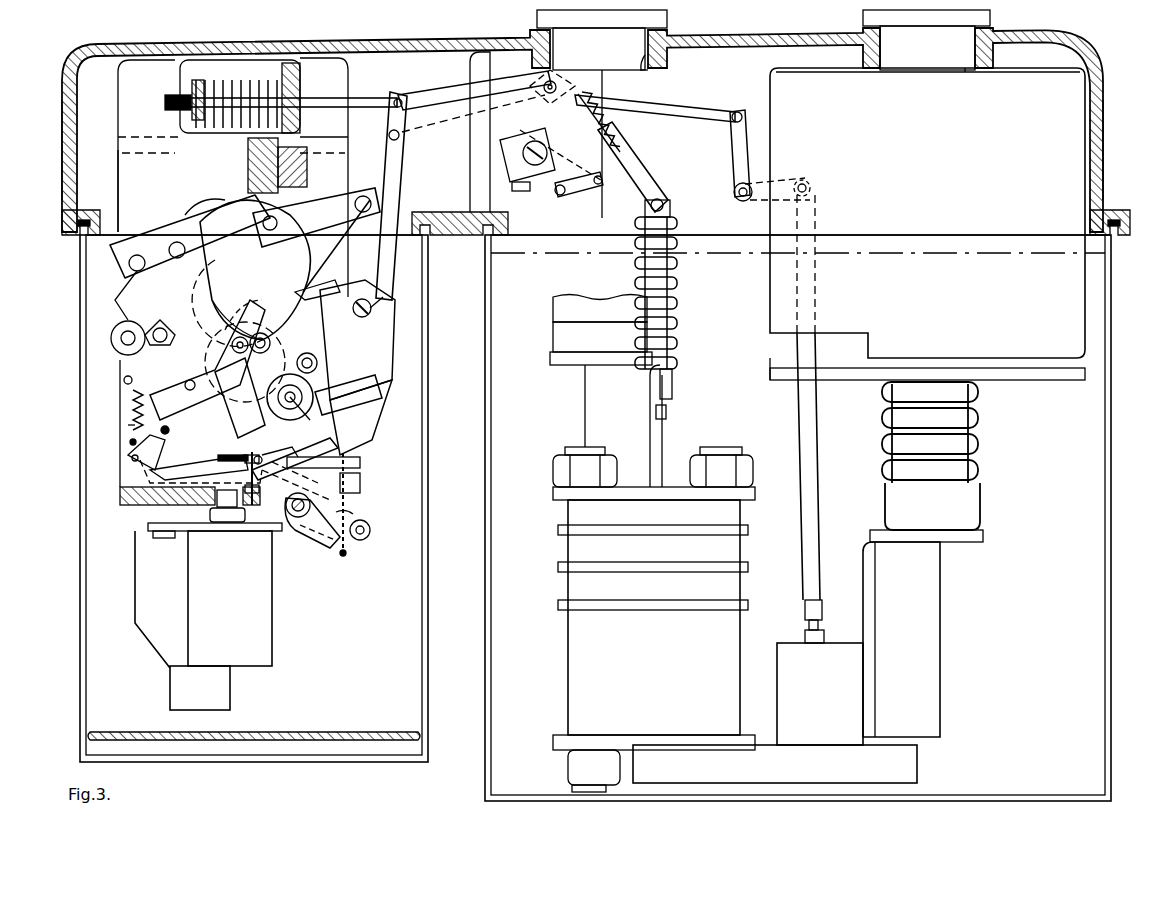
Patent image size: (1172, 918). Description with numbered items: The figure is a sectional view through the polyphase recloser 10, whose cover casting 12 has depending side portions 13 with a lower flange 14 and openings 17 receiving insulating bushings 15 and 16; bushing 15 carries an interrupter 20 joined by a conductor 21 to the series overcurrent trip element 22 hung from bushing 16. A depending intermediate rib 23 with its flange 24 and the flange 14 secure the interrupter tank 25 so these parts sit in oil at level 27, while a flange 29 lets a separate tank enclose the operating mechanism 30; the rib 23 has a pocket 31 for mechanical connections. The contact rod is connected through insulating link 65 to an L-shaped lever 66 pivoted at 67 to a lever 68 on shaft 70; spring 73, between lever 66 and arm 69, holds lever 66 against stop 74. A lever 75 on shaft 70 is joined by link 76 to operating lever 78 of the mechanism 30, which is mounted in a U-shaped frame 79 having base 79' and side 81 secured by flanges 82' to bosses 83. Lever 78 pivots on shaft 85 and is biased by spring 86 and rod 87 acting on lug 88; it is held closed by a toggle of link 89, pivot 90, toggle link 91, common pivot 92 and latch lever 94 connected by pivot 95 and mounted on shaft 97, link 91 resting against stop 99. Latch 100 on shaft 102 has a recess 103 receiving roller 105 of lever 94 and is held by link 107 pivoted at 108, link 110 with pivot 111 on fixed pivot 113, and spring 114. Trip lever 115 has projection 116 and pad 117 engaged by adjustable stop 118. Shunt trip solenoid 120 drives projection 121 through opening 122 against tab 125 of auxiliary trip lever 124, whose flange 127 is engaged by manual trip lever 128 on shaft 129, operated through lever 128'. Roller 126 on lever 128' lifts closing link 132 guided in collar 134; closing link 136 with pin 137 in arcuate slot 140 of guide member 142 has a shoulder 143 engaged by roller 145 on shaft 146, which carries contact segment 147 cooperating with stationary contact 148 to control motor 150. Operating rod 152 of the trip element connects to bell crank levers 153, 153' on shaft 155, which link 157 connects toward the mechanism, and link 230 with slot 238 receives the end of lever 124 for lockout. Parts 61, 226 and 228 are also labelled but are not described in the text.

The polyphase recloser 10 is at (1123, 59).
The cover casting 12 is at (290, 46).
The depending side portions 13 is at (62, 155).
The flange 14 is at (78, 232).
The insulating bushing 15 is at (667, 19).
The insulating bushing 16 is at (988, 15).
The opening 17 is at (643, 72).
The interrupter 20 is at (531, 669).
The conductor 21 is at (760, 745).
The overcurrent trip element 22 is at (810, 691).
The intermediate rib 23 is at (470, 174).
The flange 24 is at (461, 226).
The interrupter tank 25 is at (1111, 562).
The oil level 27 is at (1036, 258).
The flange 29 is at (80, 409).
The operating mechanism 30 is at (394, 429).
The pocket 31 is at (603, 88).
The contact conductor 61 is at (585, 406).
The insulating link 65 is at (677, 296).
The L-shaped lever 66 is at (640, 160).
The pivot 67 is at (557, 193).
The lever 68 is at (580, 158).
The arm 69 is at (548, 94).
The shaft 70 is at (527, 146).
The spring 73 is at (611, 134).
The stop 74 is at (600, 185).
The lever 75 is at (554, 82).
The link 76 is at (458, 120).
The operating lever 78 is at (393, 174).
The frame 79 is at (104, 423).
The base 79' is at (175, 508).
The side 81 is at (118, 189).
The guide 82' is at (225, 127).
The boss 83 is at (118, 94).
The shaft 85 is at (385, 302).
The spring 86 is at (268, 78).
The rod 87 is at (306, 100).
The lug 88 is at (300, 70).
The link 89 is at (340, 196).
The pivot 90 is at (365, 197).
The toggle link 91 is at (200, 220).
The common pivot 92 is at (262, 224).
The latch lever 94 is at (138, 238).
The pivot 95 is at (185, 250).
The shaft 97 is at (130, 270).
The stop 99 is at (240, 200).
The latch 100 is at (213, 296).
The shaft 102 is at (122, 328).
The recess 103 is at (122, 370).
The roller 105 is at (162, 328).
The link 107 is at (178, 414).
The pivot 108 is at (190, 378).
The link 110 is at (130, 443).
The pivot 111 is at (172, 428).
The fixed pivot 113 is at (128, 466).
The spring 114 is at (128, 426).
The trip lever 115 is at (168, 466).
The projection 116 is at (172, 436).
The pad 117 is at (253, 472).
The adjustable stop 118 is at (262, 460).
The shunt trip solenoid 120 is at (272, 598).
The armature projection 121 is at (232, 486).
The opening 122 is at (214, 512).
The auxiliary trip lever 124 is at (360, 474).
The tab 125 is at (201, 476).
The roller 126 is at (370, 532).
The flange 127 is at (325, 456).
The manual trip lever 128 is at (301, 481).
The lever 128' is at (371, 507).
The shaft 129 is at (303, 530).
The closing link 132 is at (378, 448).
The guide collar 134 is at (383, 402).
The closing link 136 is at (270, 272).
The pin 137 is at (250, 330).
The arcuate slot 140 is at (230, 358).
The guide member 142 is at (182, 386).
The shoulder 143 is at (940, 591).
The roller 145 is at (318, 362).
The shaft 146 is at (294, 407).
The contact segment 147 is at (330, 403).
The stationary contact member 148 is at (232, 346).
The motor 150 is at (135, 566).
The operating rod 152 is at (821, 518).
The bell crank lever 153 is at (801, 176).
The bell crank lever 153' is at (746, 175).
The shaft 155 is at (742, 202).
The link 157 is at (658, 112).
The pivot screw 226 is at (360, 314).
The link 228 is at (334, 268).
The link 230 is at (346, 552).
The elongated slot 238 is at (360, 492).